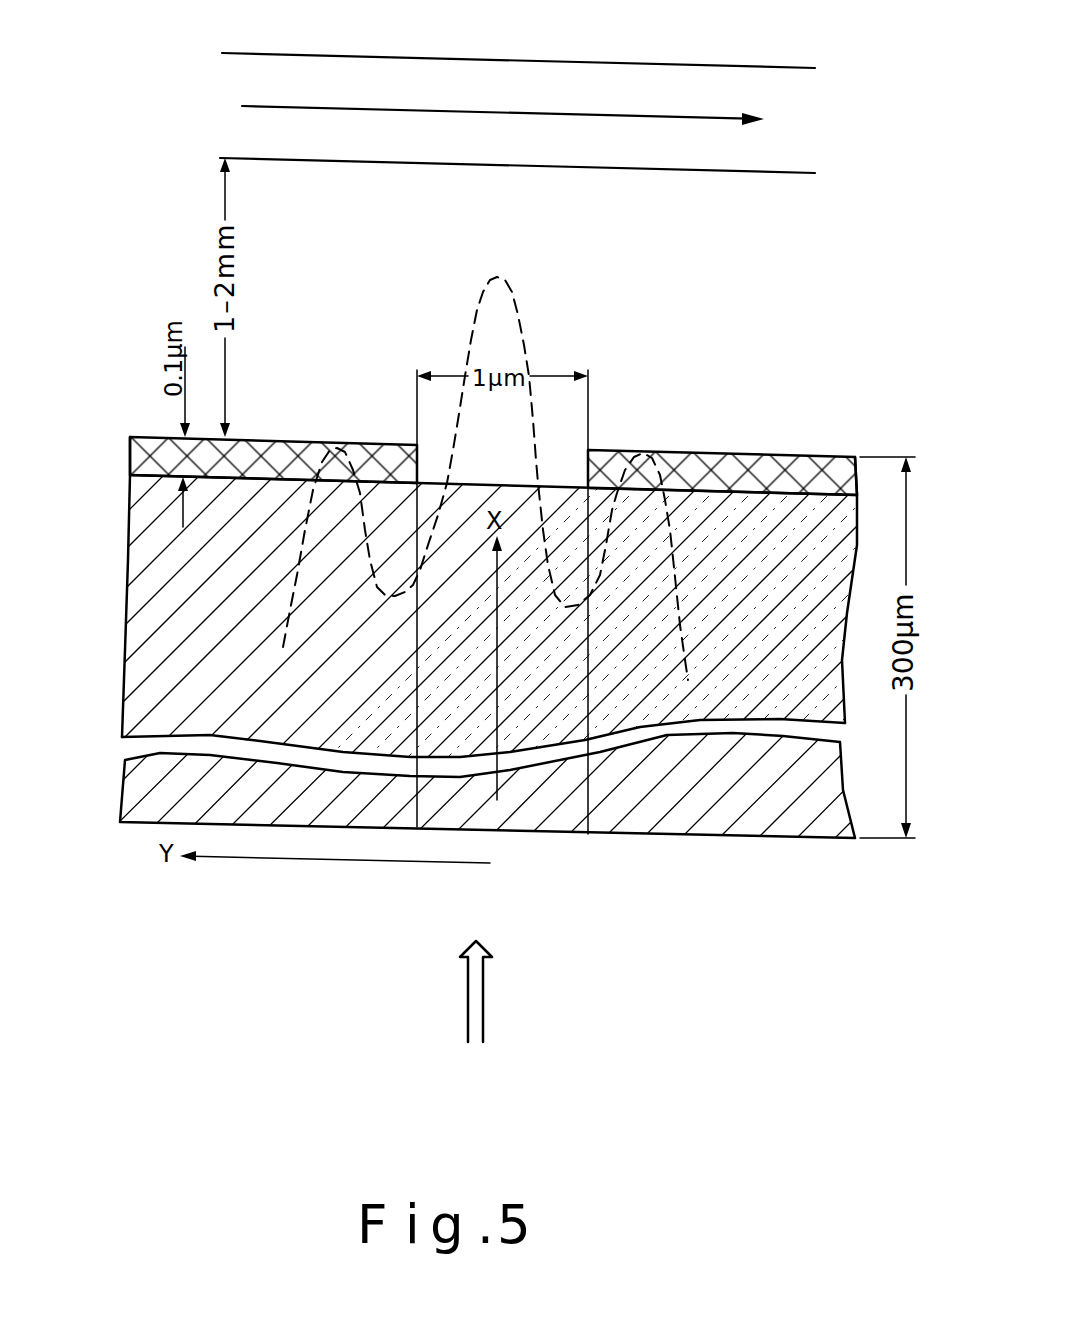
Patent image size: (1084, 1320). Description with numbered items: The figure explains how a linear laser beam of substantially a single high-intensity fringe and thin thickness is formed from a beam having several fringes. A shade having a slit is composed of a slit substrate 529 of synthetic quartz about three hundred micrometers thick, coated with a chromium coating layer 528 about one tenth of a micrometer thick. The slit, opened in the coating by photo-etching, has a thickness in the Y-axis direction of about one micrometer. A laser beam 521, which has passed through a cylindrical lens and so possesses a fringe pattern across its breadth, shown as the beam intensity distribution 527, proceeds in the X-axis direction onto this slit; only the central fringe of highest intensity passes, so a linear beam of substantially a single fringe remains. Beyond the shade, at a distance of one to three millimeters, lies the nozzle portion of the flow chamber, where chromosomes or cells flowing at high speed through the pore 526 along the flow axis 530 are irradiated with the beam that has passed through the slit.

The laser beam 521 is at (478, 1015).
The pore 526 is at (432, 142).
The beam intensity distribution 527 is at (516, 300).
The chromium coating layer 528 is at (747, 467).
The slit substrate 529 is at (805, 513).
The flow axis 530 is at (687, 120).